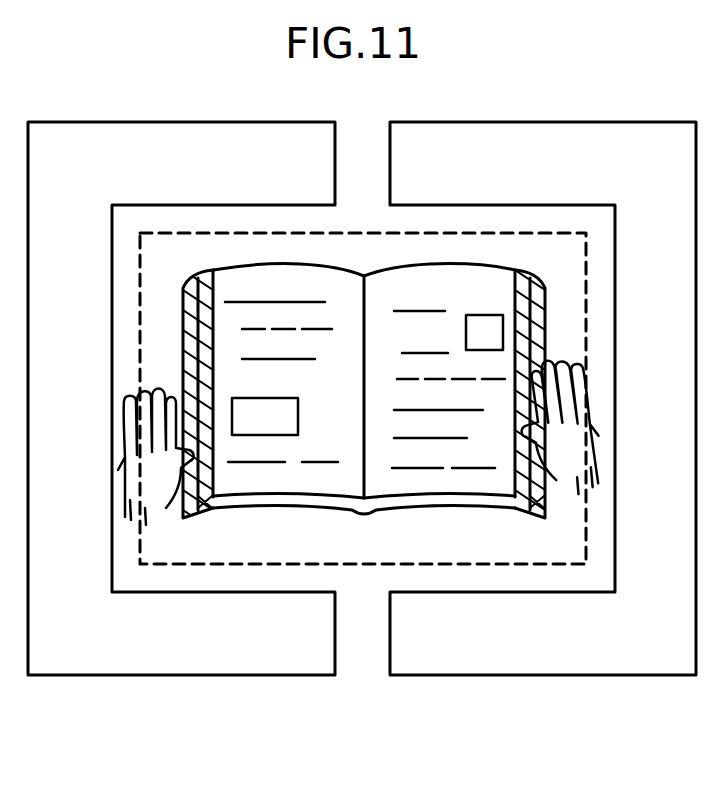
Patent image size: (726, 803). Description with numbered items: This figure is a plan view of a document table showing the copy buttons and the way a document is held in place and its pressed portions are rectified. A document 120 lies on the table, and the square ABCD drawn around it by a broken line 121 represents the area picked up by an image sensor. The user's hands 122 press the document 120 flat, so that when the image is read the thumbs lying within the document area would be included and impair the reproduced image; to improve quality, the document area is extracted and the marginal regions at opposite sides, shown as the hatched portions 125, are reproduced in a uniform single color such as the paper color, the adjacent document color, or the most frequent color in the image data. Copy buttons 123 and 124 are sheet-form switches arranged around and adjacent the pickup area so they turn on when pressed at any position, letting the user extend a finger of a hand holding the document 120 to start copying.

The document 120 is at (318, 510).
The broken line 121 is at (262, 567).
The user's hands 122 is at (125, 475).
The copy button 123 is at (181, 676).
The copy button 124 is at (448, 676).
The hatched portions 125 is at (207, 503).